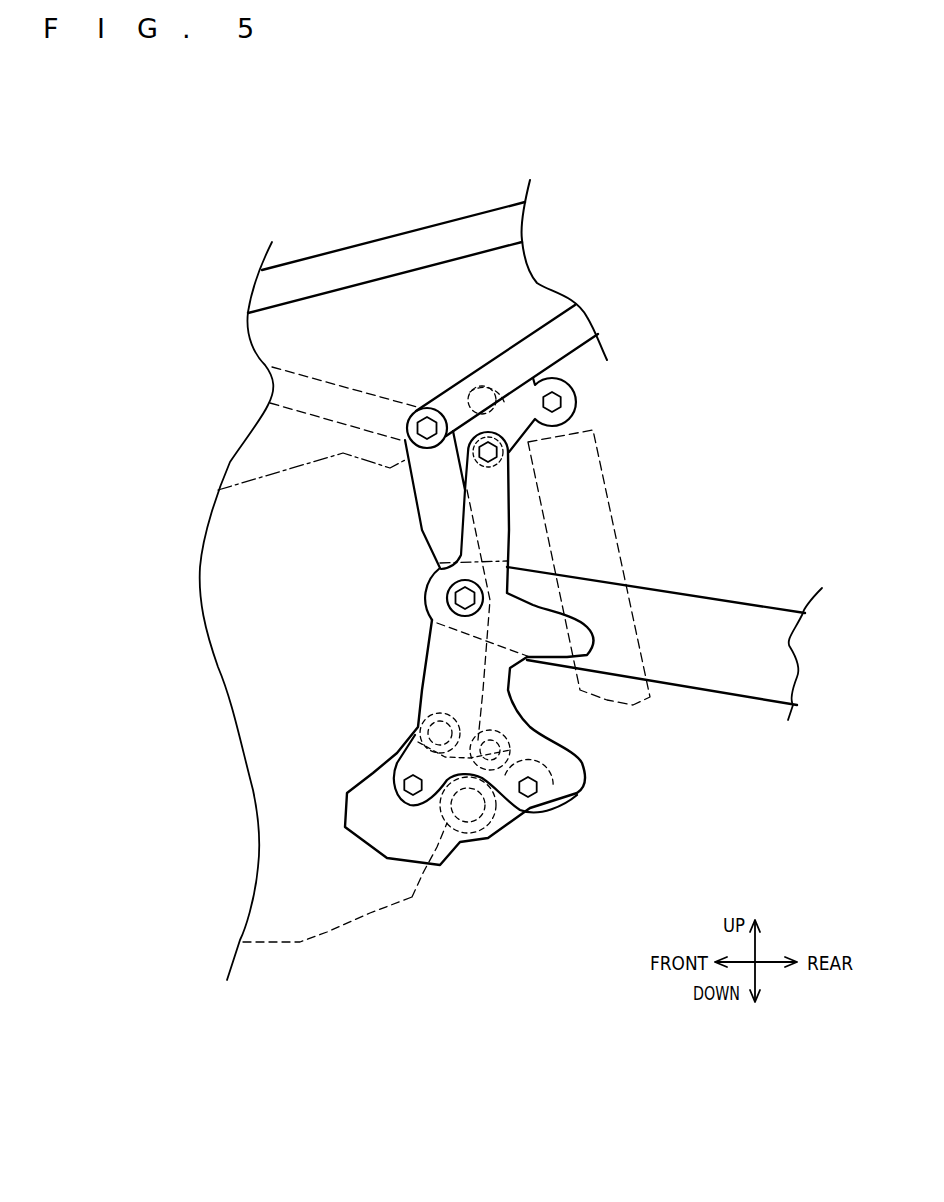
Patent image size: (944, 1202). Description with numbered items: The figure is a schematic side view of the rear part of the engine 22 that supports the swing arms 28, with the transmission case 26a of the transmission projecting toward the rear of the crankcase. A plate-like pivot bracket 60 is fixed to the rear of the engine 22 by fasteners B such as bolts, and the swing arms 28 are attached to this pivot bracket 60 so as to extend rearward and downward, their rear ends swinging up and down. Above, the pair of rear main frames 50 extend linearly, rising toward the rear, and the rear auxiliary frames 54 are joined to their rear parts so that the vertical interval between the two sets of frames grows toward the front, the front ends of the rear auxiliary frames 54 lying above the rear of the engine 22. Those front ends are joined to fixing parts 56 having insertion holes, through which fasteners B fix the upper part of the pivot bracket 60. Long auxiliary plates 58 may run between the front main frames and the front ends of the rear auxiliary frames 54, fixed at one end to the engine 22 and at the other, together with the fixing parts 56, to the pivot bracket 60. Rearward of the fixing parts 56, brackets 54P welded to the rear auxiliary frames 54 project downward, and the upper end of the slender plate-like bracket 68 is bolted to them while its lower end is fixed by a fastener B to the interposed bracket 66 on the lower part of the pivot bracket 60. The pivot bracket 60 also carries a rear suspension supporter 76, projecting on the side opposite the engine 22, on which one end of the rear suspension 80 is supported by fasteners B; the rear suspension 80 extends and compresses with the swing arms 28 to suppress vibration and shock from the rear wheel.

The engine 22 is at (297, 942).
The transmission case 26a is at (400, 903).
The swing arms 28 is at (710, 597).
The rear main frames 50 is at (381, 236).
The rear auxiliary frames 54 is at (533, 333).
The brackets 54P is at (502, 436).
The fixing parts 56 is at (413, 408).
The auxiliary plates 58 is at (327, 377).
The pivot bracket 60 is at (418, 522).
The interposed bracket 66 is at (503, 823).
The plate-like bracket 68 is at (430, 645).
The rear suspension supporter 76 is at (466, 477).
The rear suspension 80 is at (613, 525).
The fasteners B is at (416, 427).